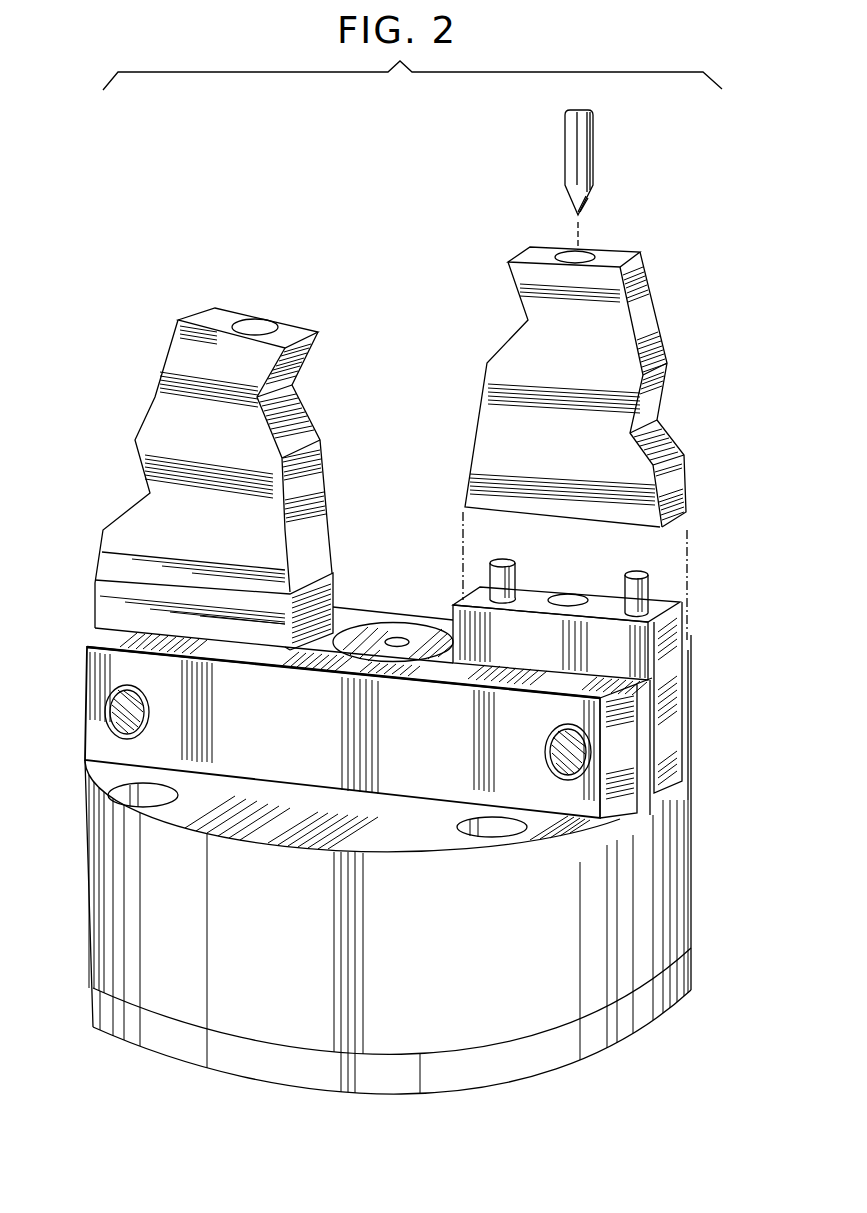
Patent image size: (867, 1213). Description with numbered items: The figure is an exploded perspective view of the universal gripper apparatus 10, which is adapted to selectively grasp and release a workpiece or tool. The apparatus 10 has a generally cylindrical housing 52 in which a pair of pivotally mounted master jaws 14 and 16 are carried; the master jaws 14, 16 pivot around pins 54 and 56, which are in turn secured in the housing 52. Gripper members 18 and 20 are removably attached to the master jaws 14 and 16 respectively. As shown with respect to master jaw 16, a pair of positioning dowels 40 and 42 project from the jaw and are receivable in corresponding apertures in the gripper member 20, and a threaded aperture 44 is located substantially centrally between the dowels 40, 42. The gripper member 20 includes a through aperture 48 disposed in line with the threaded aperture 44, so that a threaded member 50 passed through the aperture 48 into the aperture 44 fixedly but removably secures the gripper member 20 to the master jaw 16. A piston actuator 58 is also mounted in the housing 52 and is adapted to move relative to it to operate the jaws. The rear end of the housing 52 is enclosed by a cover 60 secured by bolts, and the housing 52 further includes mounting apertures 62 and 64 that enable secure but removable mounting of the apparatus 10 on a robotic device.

The universal gripper apparatus 10 is at (159, 271).
The master jaw 14 is at (93, 603).
The master jaw 16 is at (664, 655).
The gripper member 18 is at (150, 403).
The gripper member 20 is at (650, 315).
The positioning dowel 40 is at (627, 582).
The positioning dowel 42 is at (490, 572).
The threaded aperture 44 is at (560, 598).
The through aperture 48 is at (603, 243).
The threaded member 50 is at (592, 172).
The cylindrical housing 52 is at (693, 826).
The pin 54 is at (108, 718).
The pin 56 is at (578, 757).
The piston actuator 58 is at (358, 630).
The cover 60 is at (663, 982).
The mounting aperture 62 is at (480, 820).
The mounting aperture 64 is at (103, 790).